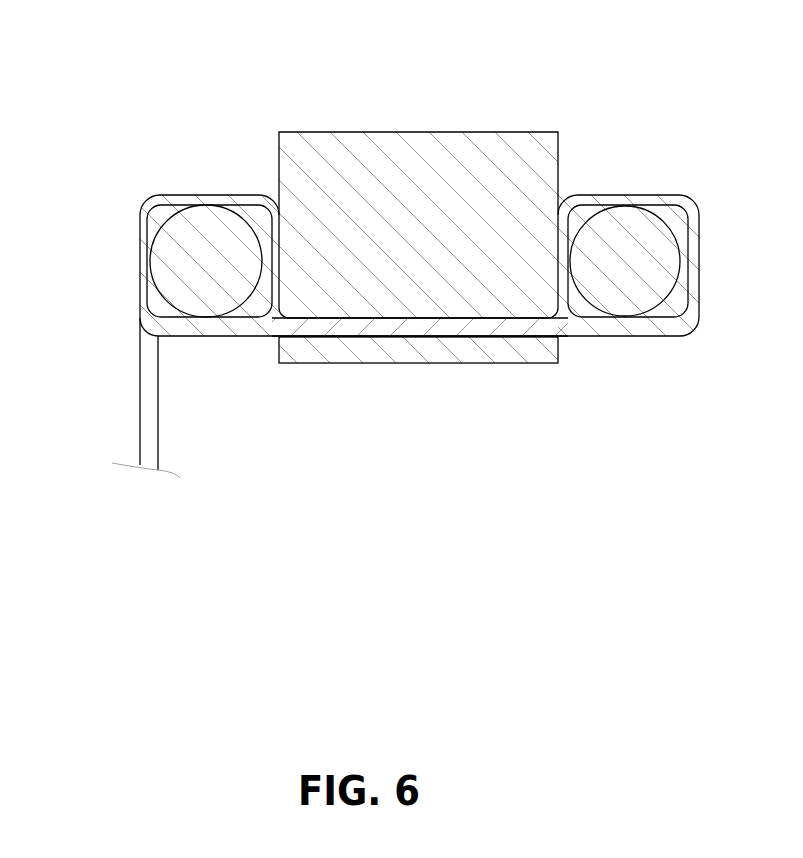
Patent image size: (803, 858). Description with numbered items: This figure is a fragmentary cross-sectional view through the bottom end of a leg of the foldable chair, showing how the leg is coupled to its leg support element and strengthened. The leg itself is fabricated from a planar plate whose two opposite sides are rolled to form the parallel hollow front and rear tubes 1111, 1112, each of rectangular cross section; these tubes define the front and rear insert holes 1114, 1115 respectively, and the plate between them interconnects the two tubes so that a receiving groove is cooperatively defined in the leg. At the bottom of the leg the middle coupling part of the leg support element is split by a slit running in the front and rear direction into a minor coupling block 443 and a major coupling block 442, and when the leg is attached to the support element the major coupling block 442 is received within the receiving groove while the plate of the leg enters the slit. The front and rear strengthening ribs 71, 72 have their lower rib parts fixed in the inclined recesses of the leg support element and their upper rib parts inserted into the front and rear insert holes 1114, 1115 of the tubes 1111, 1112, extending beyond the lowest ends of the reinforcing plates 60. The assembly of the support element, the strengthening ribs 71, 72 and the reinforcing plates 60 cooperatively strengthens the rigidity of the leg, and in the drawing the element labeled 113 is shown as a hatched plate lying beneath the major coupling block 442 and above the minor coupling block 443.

The reinforcing plate 60 is at (153, 430).
The front strengthening rib 71 is at (205, 290).
The rear strengthening rib 72 is at (630, 298).
The connecting plate 113 is at (387, 323).
The major coupling block 442 is at (452, 168).
The minor coupling block 443 is at (487, 352).
The front tube 1111 is at (197, 208).
The rear tube 1112 is at (631, 205).
The front insert hole 1114 is at (243, 218).
The rear insert hole 1115 is at (662, 210).